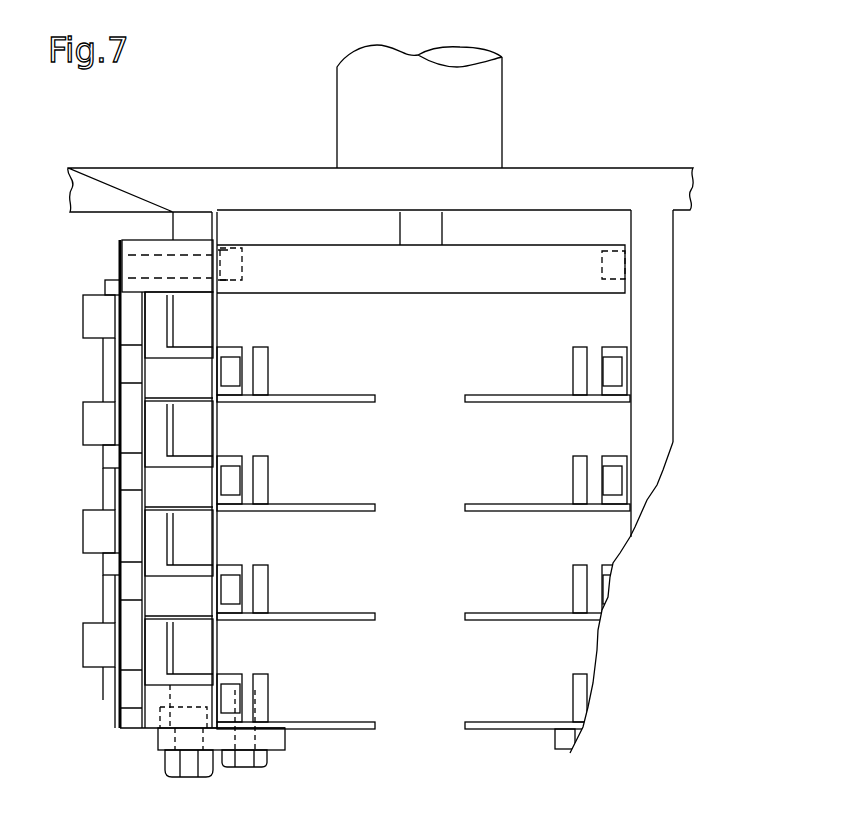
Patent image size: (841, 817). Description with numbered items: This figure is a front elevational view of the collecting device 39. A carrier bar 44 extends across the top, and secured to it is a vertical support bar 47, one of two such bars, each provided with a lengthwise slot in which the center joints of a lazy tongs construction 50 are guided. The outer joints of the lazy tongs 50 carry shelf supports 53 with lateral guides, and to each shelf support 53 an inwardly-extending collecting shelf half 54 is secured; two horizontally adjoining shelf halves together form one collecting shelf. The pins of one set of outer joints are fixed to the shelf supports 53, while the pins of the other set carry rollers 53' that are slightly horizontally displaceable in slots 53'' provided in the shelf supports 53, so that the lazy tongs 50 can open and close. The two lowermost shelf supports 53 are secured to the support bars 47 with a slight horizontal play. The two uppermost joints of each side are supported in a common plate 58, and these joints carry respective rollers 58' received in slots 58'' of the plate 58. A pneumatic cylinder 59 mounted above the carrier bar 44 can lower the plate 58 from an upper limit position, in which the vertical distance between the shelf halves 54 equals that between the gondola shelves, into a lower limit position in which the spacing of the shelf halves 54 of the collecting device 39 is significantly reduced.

The collecting device 39 is at (92, 130).
The carrier bar 44 is at (584, 181).
The vertical support bar 47 is at (655, 345).
The lazy tongs construction 50 is at (66, 366).
The shelf support 53 is at (422, 534).
The roller 53' is at (415, 517).
The slot 53'' is at (419, 512).
The collecting shelf half 54 is at (470, 403).
The common plate 58 is at (421, 211).
The roller 58' is at (242, 204).
The slot 58'' is at (206, 204).
The pneumatic cylinder 59 is at (355, 105).